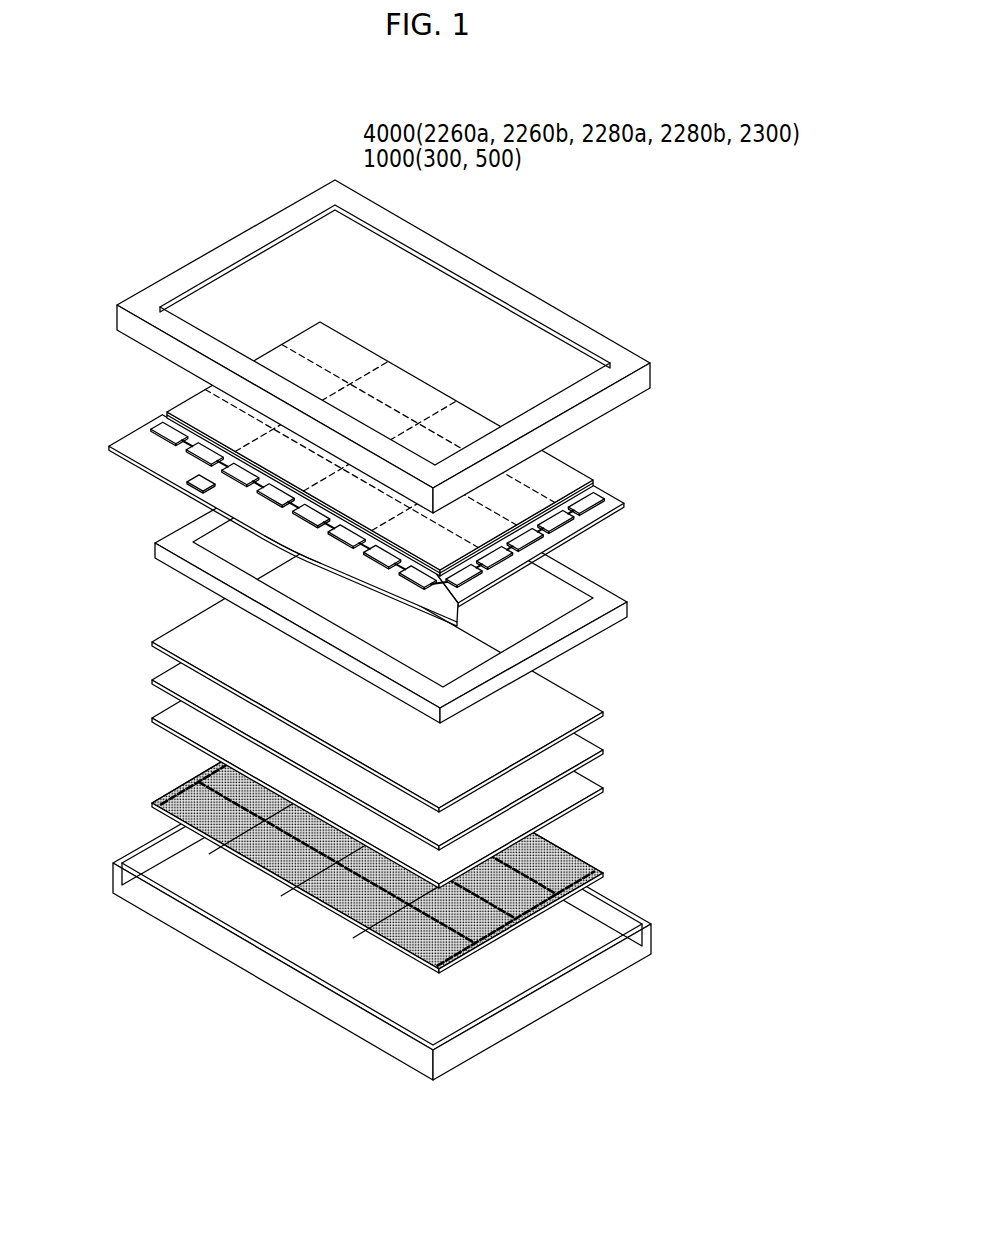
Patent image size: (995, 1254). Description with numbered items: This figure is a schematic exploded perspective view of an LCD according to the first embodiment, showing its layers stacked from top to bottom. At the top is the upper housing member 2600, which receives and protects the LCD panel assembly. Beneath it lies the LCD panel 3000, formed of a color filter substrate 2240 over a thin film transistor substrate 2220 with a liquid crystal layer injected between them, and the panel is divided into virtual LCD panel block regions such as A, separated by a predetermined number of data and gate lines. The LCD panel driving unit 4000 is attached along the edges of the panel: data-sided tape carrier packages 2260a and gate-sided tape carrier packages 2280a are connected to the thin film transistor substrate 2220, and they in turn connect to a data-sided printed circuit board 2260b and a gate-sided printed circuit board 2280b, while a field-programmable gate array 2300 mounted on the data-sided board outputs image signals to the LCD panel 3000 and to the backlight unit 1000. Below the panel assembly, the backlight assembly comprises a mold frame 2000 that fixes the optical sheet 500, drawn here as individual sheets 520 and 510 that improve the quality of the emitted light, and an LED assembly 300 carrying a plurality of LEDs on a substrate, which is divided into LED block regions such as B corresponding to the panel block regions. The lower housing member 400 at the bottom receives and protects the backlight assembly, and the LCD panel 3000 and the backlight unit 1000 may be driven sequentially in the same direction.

The LCD panel driving unit 4000 is at (376, 509).
The backlight unit 1000 is at (447, 800).
The upper housing member 2600 is at (653, 378).
The LCD panel 3000 is at (450, 449).
The color filter substrate 2240 is at (566, 462).
The thin film transistor substrate 2220 is at (592, 488).
The gate-sided printed circuit board 2280b is at (626, 503).
The gate-sided tape carrier package 2280a is at (576, 523).
The data-sided tape carrier package 2260a is at (162, 427).
The data-sided printed circuit board 2260b is at (133, 438).
The field-programmable gate array 2300 is at (186, 474).
The mold frame 2000 is at (630, 605).
The optical sheet 500 is at (447, 716).
The upper optical sheet 520 is at (606, 712).
The lower optical sheet 510 is at (606, 787).
The LED assembly 300 is at (425, 880).
The lower housing member 400 is at (648, 942).
The LCD panel block region A is at (414, 535).
The LED block region B is at (393, 947).